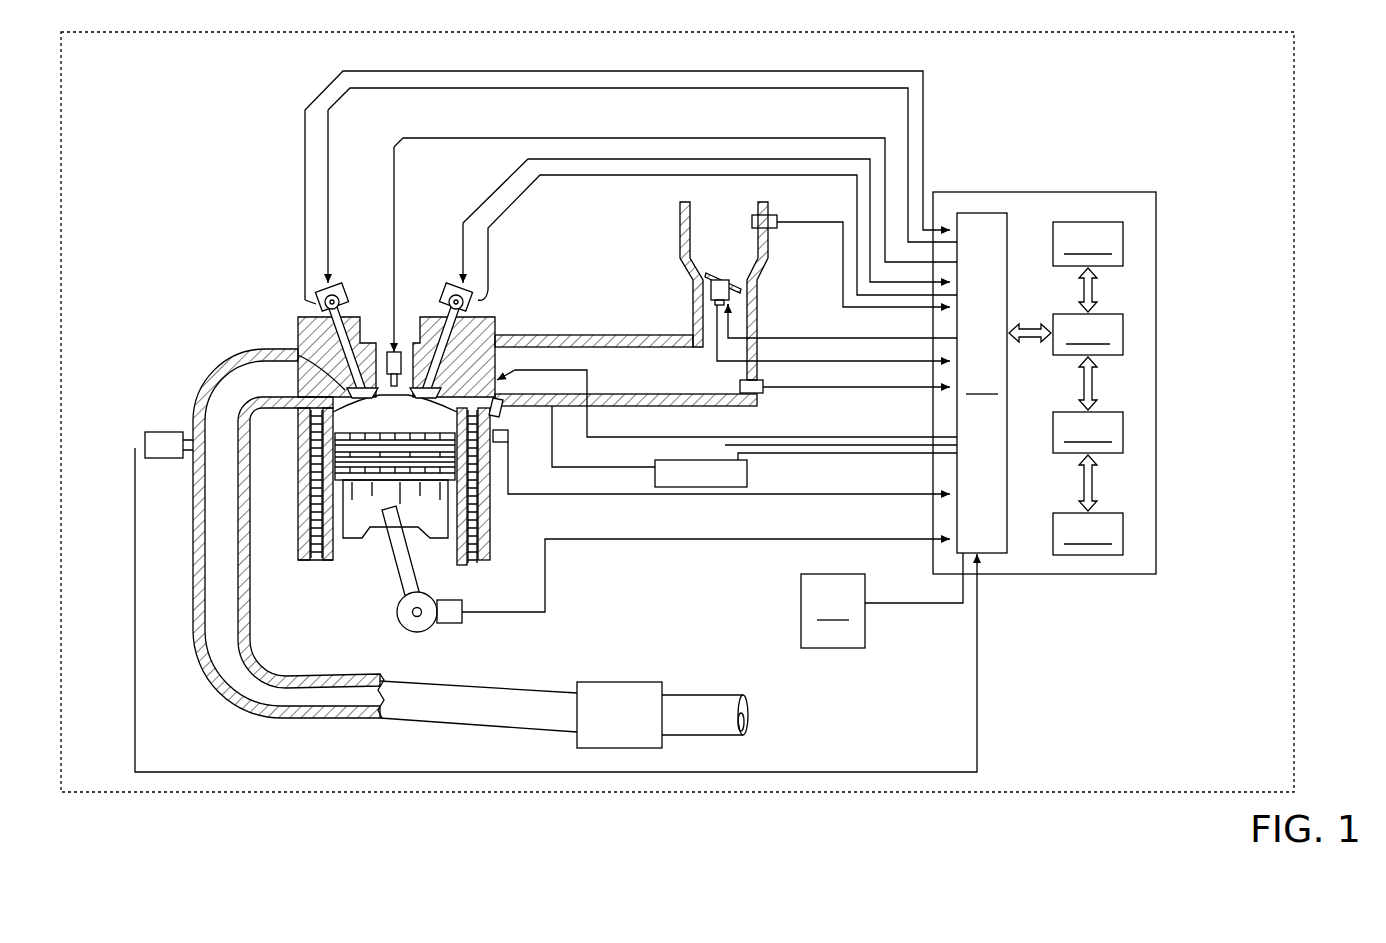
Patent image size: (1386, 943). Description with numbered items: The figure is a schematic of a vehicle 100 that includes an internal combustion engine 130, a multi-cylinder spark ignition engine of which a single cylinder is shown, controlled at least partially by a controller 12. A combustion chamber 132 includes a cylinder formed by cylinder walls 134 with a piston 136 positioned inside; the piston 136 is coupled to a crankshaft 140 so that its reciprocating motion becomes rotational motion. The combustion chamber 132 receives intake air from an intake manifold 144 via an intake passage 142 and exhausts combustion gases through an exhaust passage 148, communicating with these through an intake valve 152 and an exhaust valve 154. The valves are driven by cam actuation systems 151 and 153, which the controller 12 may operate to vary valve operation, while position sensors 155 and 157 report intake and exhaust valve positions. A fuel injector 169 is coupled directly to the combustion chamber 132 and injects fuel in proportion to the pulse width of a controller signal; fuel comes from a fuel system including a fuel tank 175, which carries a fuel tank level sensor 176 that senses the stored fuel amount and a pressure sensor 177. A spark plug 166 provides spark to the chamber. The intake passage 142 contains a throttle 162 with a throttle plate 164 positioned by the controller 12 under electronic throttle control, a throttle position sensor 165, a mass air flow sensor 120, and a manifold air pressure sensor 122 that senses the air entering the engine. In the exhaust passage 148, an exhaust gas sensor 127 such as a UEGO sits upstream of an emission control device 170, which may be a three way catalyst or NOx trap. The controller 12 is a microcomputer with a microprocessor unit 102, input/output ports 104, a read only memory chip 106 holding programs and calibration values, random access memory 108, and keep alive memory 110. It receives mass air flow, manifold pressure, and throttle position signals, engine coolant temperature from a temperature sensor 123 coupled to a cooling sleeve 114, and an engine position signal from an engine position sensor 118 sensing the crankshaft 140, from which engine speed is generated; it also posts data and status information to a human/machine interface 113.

The vehicle 100 is at (1203, 31).
The controller 12 is at (1148, 194).
The microprocessor unit 102 is at (1124, 327).
The input/output ports 104 is at (1010, 222).
The read only memory chip 106 is at (1124, 240).
The random access memory 108 is at (1124, 430).
The keep alive memory 110 is at (1124, 530).
The human/machine interface 113 is at (882, 600).
The cooling sleeve 114 is at (485, 553).
The engine position sensor 118 is at (450, 622).
The mass air flow sensor 120 is at (768, 215).
The manifold air pressure sensor 122 is at (757, 394).
The temperature sensor 123 is at (506, 443).
The exhaust gas sensor 127 is at (147, 433).
The internal combustion engine 130 is at (237, 275).
The combustion chamber 132 is at (322, 470).
The cylinder walls 134 is at (341, 548).
The piston 136 is at (380, 512).
The crankshaft 140 is at (408, 628).
The intake passage 142 is at (744, 246).
The intake manifold 144 is at (657, 379).
The exhaust passage 148 is at (288, 389).
The cam actuation system 151 is at (450, 287).
The intake valve 152 is at (497, 377).
The cam actuation system 153 is at (337, 287).
The exhaust valve 154 is at (297, 352).
The position sensor 155 is at (480, 298).
The position sensor 157 is at (313, 302).
The throttle 162 is at (742, 284).
The throttle plate 164 is at (707, 280).
The throttle position sensor 165 is at (718, 305).
The spark plug 166 is at (399, 348).
The fuel injector 169 is at (500, 416).
The emission control device 170 is at (563, 711).
The fuel tank 175 is at (701, 473).
The fuel tank level sensor 176 is at (735, 476).
The pressure sensor 177 is at (740, 462).